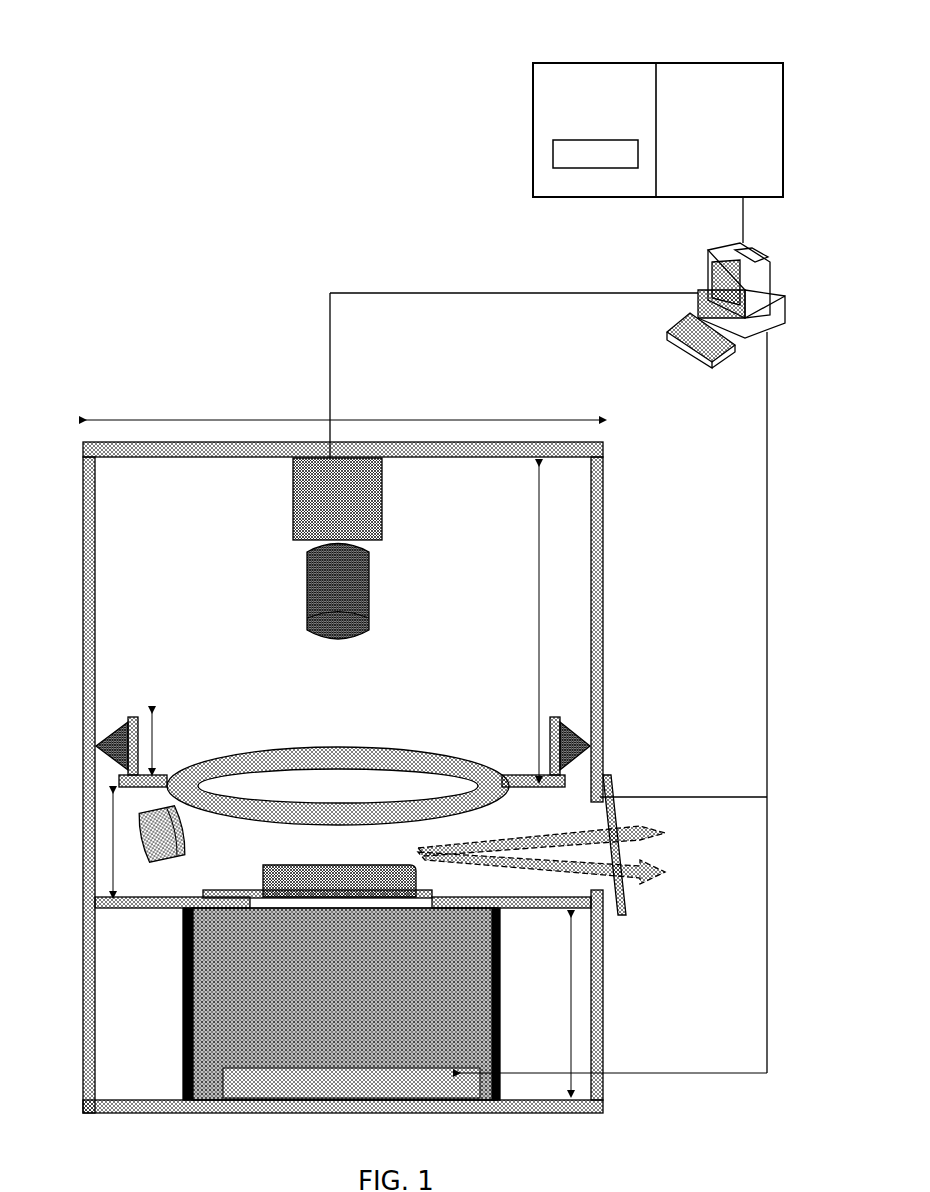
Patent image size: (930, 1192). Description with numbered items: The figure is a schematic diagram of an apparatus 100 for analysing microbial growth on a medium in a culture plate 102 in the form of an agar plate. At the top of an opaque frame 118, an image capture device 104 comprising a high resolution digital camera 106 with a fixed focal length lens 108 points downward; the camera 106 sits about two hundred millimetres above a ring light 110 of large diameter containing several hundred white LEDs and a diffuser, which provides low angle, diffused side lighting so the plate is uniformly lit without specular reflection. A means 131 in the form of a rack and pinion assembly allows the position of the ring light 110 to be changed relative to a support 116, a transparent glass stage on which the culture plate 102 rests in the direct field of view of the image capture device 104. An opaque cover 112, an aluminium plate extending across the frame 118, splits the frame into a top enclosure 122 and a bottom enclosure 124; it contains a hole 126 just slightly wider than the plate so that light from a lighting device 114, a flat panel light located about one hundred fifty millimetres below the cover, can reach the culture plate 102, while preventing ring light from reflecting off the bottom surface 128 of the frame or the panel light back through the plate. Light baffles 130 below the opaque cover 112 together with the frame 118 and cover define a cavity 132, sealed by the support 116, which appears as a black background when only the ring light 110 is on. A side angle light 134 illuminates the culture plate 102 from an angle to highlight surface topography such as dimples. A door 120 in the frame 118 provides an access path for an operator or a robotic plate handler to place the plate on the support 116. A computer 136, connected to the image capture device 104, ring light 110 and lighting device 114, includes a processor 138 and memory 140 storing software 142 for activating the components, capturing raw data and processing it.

The apparatus 100 is at (156, 318).
The culture plate 102 is at (340, 865).
The image capture device 104 is at (345, 554).
The digital camera 106 is at (382, 530).
The lens 108 is at (369, 600).
The ring light 110 is at (332, 748).
The opaque cover 112 is at (112, 892).
The lighting device 114 is at (393, 1078).
The support 116 is at (212, 890).
The frame 118 is at (93, 700).
The door 120 is at (613, 800).
The top enclosure 122 is at (565, 575).
The bottom enclosure 124 is at (515, 1013).
The hole 126 is at (415, 866).
The bottom surface 128 is at (213, 1098).
The light baffles 130 is at (188, 1035).
The means for changing the position of the ring light 131 is at (100, 745).
The cavity 132 is at (236, 978).
The side angle light 134 is at (158, 818).
The computer 136 is at (712, 268).
The processor 138 is at (712, 63).
The memory 140 is at (533, 112).
The software 142 is at (553, 162).